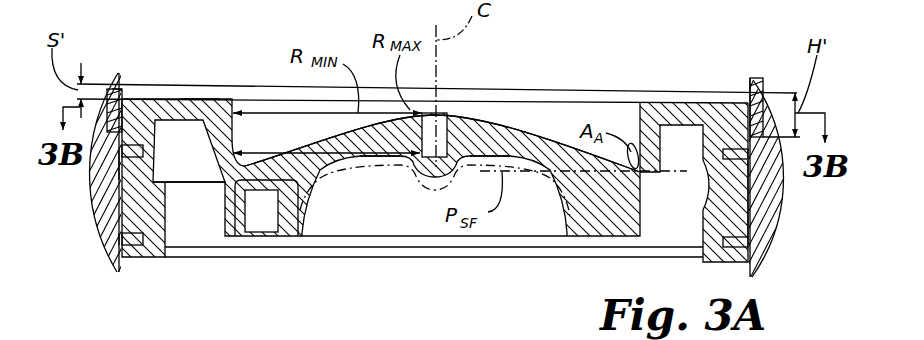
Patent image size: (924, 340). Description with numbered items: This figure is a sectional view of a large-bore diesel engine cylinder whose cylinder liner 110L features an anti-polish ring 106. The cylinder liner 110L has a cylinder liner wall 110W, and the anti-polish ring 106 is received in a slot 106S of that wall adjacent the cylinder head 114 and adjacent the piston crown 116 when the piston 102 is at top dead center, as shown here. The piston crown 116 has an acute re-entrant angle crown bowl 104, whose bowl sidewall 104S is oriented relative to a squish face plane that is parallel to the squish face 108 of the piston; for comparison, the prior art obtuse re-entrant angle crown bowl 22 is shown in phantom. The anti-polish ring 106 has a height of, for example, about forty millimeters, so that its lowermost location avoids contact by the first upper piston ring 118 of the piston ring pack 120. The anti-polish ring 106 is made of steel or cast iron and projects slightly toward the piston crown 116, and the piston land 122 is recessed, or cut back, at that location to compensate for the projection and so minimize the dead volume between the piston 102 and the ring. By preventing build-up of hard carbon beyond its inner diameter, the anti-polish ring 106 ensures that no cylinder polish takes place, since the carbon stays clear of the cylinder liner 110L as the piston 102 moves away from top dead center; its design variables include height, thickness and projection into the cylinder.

The piston 102 is at (781, 182).
The acute re-entrant angle crown bowl 104 is at (483, 131).
The bowl sidewall 104S is at (632, 142).
The anti-polish ring 106 is at (119, 161).
The slot 106S is at (113, 87).
The squish face 108 is at (193, 99).
The cylinder liner wall 110W is at (160, 182).
The cylinder liner 110L is at (752, 190).
The cylinder head 114 is at (327, 133).
The piston crown 116 is at (693, 102).
The first (upper) piston ring 118 is at (115, 166).
The piston ring pack 120 is at (120, 237).
The piston land 122 is at (757, 79).
The obtuse re-entrant angle crown bowl 22 is at (544, 150).